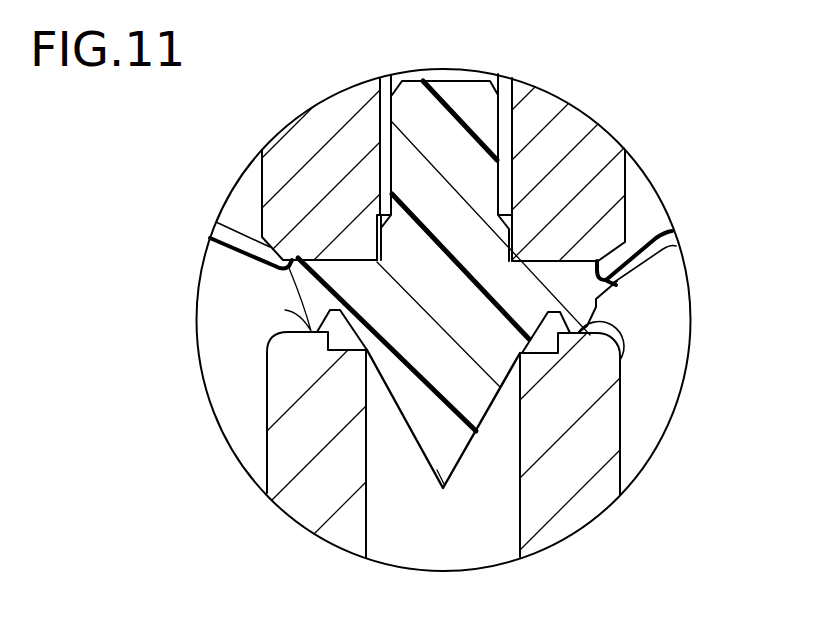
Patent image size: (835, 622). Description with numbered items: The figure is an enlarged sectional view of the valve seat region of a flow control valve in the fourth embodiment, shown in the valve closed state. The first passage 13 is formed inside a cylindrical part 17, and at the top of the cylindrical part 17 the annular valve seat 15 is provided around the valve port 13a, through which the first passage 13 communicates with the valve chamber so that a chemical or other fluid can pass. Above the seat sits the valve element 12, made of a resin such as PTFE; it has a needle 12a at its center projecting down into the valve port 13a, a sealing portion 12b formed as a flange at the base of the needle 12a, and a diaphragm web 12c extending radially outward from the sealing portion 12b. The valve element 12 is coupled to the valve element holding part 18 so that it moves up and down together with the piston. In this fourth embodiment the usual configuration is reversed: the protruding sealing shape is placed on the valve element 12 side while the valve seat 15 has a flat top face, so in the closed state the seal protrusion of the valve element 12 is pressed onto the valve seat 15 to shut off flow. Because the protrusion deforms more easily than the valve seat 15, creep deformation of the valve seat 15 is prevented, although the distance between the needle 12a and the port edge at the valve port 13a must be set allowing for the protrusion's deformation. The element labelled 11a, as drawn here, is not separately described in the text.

The valve seat 11a is at (336, 348).
The valve element 12 is at (476, 276).
The needle 12a is at (465, 427).
The sealing portion 12b is at (620, 360).
The diaphragm web 12c is at (640, 258).
The first passage 13 is at (487, 512).
The valve port 13a is at (369, 491).
The valve seat 15 is at (285, 310).
The cylindrical part 17 is at (313, 488).
The valve element holding part 18 is at (298, 195).